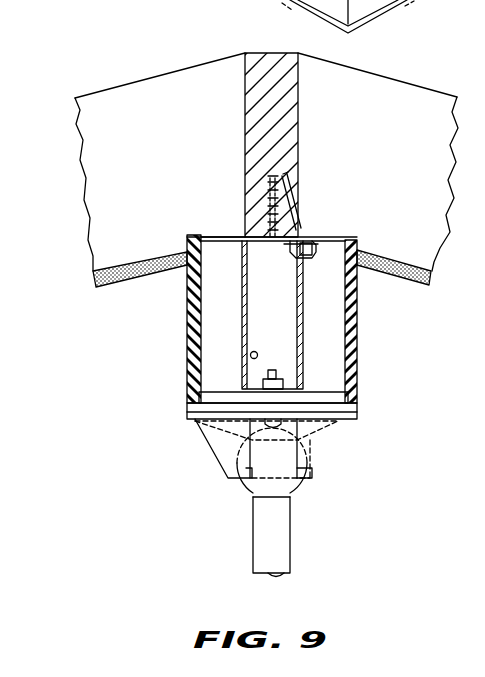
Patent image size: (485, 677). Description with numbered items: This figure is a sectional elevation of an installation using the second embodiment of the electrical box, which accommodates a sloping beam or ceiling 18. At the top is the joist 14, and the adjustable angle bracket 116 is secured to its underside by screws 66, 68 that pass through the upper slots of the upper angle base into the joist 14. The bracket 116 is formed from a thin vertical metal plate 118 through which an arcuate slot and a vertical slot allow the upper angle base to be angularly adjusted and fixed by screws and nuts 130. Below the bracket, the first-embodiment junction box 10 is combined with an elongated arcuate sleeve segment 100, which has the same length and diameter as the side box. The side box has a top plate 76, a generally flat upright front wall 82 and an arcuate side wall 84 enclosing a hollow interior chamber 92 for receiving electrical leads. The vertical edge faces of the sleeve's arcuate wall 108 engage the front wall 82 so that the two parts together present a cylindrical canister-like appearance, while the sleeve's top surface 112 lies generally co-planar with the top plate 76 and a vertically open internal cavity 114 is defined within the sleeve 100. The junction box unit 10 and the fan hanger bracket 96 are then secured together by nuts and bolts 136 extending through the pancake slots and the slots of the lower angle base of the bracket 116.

The electrical junction box 10 is at (340, 424).
The joist 14 is at (272, 60).
The ceiling 18 is at (140, 268).
The screw 66 is at (332, 192).
The screw 68 is at (306, 165).
The top plate 76 is at (218, 236).
The front wall 82 is at (250, 361).
The arcuate side wall 84 is at (187, 333).
The interior chamber 92 is at (240, 318).
The fan hanger bracket 96 is at (212, 456).
The arcuate sleeve segment 100 is at (242, 250).
The arcuate wall 108 is at (357, 387).
The top surface 112 is at (357, 240).
The internal cavity 114 is at (338, 325).
The adjustable angle bracket 116 is at (296, 312).
The vertical metal plate 118 is at (303, 272).
The screws and nuts 130 is at (300, 240).
The nuts and bolts 136 is at (250, 444).